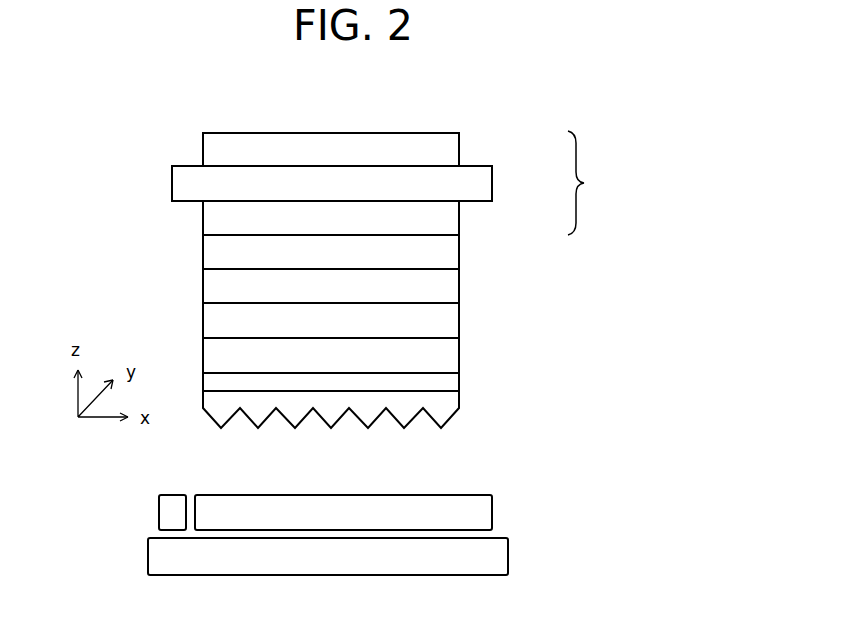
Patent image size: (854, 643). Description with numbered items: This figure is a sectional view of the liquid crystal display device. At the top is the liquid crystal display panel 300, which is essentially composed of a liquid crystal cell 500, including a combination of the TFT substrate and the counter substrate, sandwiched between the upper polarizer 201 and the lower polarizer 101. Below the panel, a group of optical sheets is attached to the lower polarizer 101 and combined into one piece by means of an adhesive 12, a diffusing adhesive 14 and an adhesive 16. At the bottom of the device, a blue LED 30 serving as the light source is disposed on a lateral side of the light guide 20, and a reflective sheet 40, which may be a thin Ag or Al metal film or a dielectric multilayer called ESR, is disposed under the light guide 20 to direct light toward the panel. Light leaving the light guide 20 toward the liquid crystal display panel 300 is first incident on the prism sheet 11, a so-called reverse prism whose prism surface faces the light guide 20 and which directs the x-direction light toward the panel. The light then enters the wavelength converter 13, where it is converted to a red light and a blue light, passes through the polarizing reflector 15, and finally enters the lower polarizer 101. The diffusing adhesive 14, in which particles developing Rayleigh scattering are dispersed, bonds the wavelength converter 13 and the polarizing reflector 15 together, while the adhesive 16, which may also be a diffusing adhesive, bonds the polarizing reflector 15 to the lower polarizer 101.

The upper polarizer 201 is at (447, 150).
The liquid crystal cell 500 is at (478, 186).
The lower polarizer 101 is at (447, 217).
The liquid crystal display panel 300 is at (602, 183).
The adhesive 16 is at (447, 253).
The polarizing reflector 15 is at (447, 288).
The diffusing adhesive 14 is at (447, 322).
The wavelength converter 13 is at (447, 356).
The adhesive 12 is at (447, 388).
The prism sheet 11 is at (447, 418).
The blue LED 30 is at (172, 505).
The light guide 20 is at (252, 505).
The reflective sheet 40 is at (160, 560).